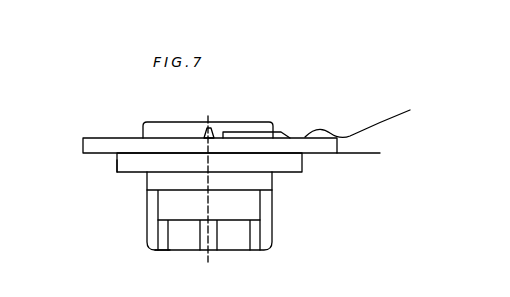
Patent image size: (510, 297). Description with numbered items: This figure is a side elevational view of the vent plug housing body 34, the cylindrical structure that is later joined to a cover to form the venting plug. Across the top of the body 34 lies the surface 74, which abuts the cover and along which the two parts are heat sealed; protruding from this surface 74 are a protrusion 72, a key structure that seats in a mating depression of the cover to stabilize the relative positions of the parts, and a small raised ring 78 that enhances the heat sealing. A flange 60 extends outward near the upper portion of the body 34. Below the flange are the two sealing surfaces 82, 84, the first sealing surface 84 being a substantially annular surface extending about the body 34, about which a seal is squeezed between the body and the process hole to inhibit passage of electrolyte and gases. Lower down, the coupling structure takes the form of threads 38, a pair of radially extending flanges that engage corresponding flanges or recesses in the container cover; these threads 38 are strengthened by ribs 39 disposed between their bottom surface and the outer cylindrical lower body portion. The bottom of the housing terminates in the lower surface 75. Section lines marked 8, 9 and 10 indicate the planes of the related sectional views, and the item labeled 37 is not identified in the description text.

The section line 8- 8 is at (357, 132).
The section line 9- 9 is at (53, 263).
The section line 10- 10 is at (98, 255).
The body 34 is at (255, 155).
The housing body 37 is at (272, 228).
The threads 38 is at (253, 204).
The ribs 39 is at (160, 250).
The flange 60 is at (272, 123).
The protrusion 72 is at (212, 134).
The surface 74 is at (370, 117).
The lower surface 75 is at (253, 250).
The raised ring 78 is at (135, 137).
The sealing surface 82 is at (302, 156).
The first sealing surface 84 is at (116, 172).